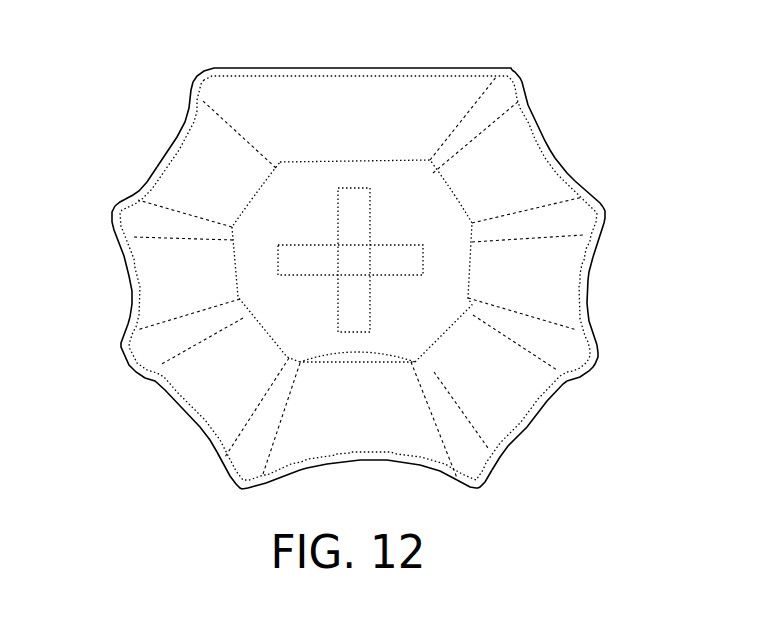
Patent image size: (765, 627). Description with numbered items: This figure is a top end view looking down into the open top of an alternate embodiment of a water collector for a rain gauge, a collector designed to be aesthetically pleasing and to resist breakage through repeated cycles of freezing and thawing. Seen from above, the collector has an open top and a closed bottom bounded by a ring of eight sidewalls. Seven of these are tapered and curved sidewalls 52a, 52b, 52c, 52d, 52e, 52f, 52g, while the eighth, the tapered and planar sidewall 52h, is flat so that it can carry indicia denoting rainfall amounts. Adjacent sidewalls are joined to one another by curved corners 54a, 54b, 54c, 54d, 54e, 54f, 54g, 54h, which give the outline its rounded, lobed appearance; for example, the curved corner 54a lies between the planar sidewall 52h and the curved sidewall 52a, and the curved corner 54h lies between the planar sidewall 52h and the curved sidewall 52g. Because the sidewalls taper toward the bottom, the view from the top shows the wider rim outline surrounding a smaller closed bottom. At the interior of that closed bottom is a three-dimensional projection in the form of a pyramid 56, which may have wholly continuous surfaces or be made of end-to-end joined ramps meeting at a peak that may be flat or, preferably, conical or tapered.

The tapered and curved sidewall 52a is at (175, 145).
The tapered and curved sidewall 52b is at (131, 283).
The tapered and curved sidewall 52c is at (178, 410).
The tapered and curved sidewall 52d is at (365, 460).
The tapered and curved sidewall 52e is at (530, 419).
The tapered and curved sidewall 52f is at (590, 283).
The tapered and curved sidewall 52g is at (550, 150).
The tapered and planar sidewall 52h is at (335, 66).
The curved corner 54a is at (207, 68).
The curved corner 54b is at (120, 206).
The curved corner 54c is at (122, 350).
The curved corner 54d is at (232, 486).
The curved corner 54e is at (482, 490).
The curved corner 54f is at (597, 368).
The curved corner 54g is at (607, 210).
The curved corner 54h is at (520, 78).
The pyramid 56 is at (316, 209).